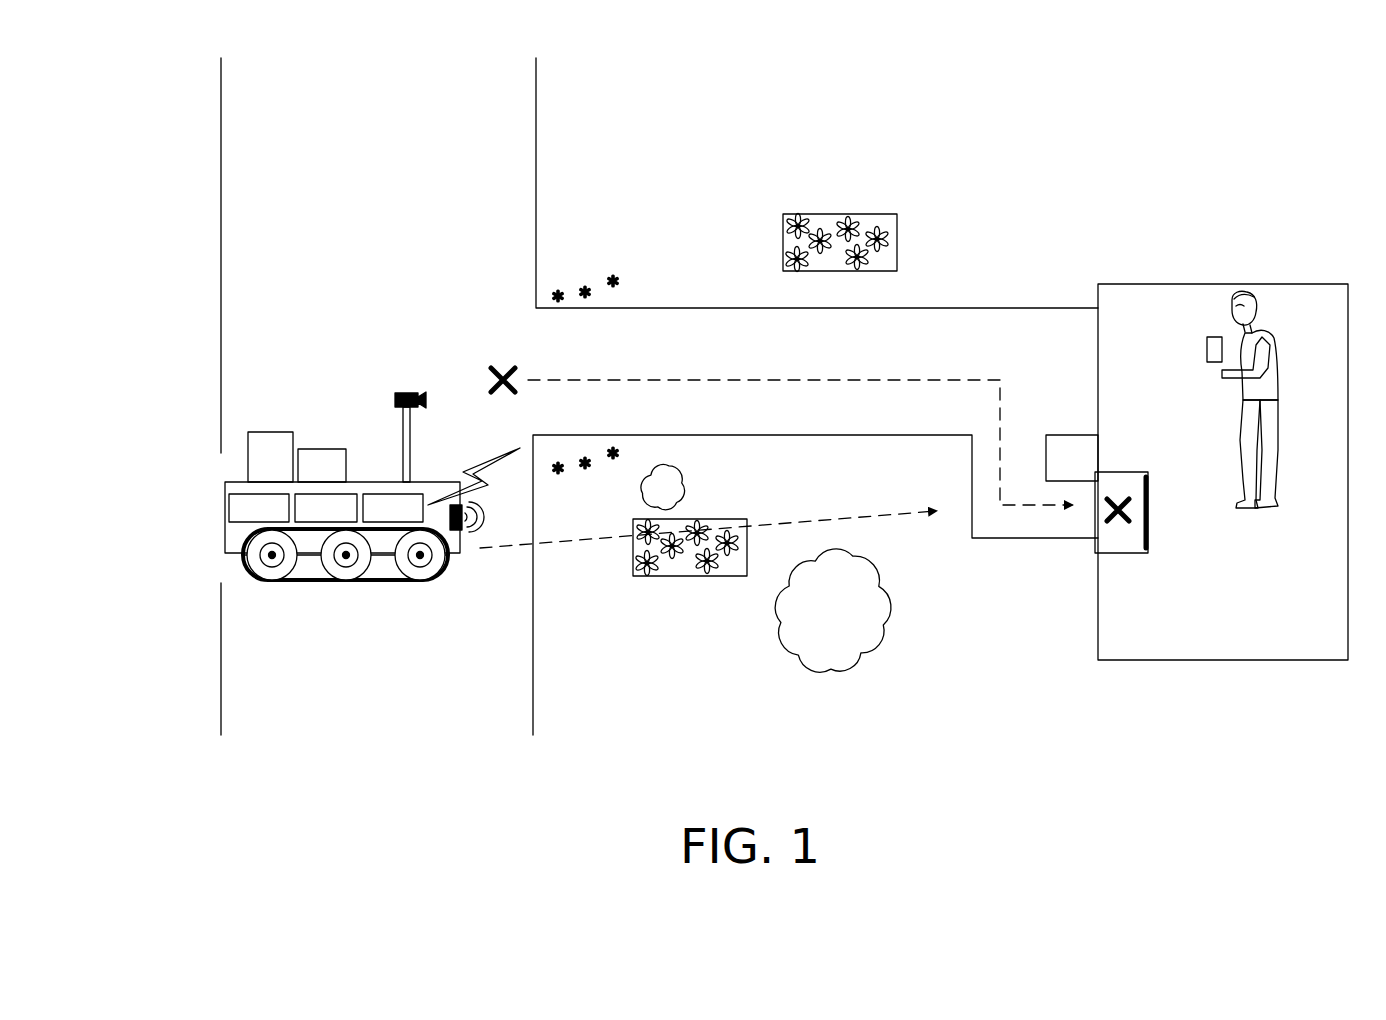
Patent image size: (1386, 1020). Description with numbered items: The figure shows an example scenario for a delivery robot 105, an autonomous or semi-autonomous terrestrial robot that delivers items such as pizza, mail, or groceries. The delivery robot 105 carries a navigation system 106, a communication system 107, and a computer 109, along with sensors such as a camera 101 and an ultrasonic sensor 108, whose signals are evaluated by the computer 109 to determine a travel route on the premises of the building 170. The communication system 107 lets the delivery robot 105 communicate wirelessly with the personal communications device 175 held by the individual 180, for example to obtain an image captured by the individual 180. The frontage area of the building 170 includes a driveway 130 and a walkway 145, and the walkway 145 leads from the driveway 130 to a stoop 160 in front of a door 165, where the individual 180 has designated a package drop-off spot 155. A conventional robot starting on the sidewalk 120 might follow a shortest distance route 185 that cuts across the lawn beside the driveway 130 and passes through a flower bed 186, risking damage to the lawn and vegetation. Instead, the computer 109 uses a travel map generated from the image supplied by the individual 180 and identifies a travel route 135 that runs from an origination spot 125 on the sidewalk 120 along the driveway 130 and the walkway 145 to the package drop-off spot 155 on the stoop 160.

The camera 101 is at (390, 397).
The delivery robot 105 is at (320, 487).
The navigation system 106 is at (326, 508).
The communication system 107 is at (393, 508).
The ultrasonic sensor 108 is at (466, 536).
The computer 109 is at (259, 508).
The sidewalk 120 is at (308, 396).
The origination spot 125 is at (501, 362).
The driveway 130 is at (815, 396).
The travel route 135 is at (793, 378).
The walkway 145 is at (1052, 458).
The package drop-off spot 155 is at (1122, 490).
The stoop 160 is at (1117, 553).
The door 165 is at (1150, 510).
The building 170 is at (1223, 472).
The personal communications device 175 is at (1205, 348).
The individual 180 is at (1250, 399).
The shortest distance route 185 is at (800, 520).
The flower bed 186 is at (672, 577).